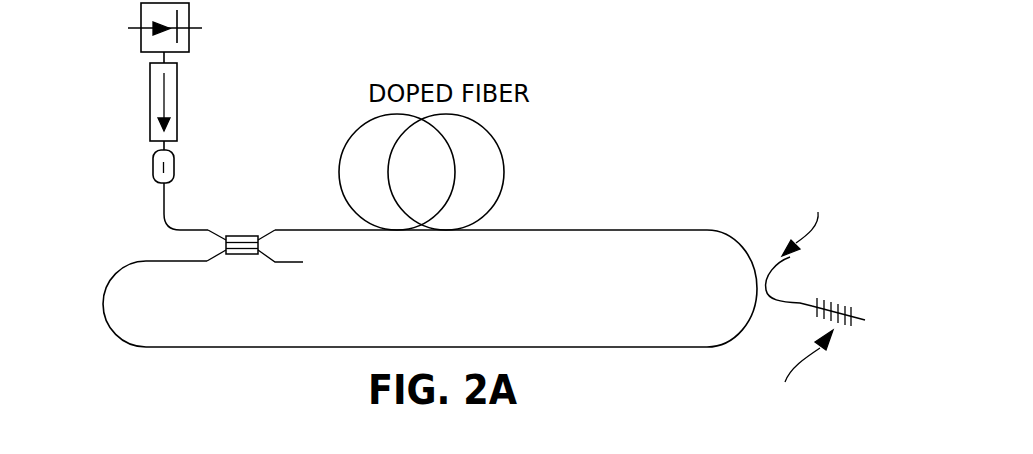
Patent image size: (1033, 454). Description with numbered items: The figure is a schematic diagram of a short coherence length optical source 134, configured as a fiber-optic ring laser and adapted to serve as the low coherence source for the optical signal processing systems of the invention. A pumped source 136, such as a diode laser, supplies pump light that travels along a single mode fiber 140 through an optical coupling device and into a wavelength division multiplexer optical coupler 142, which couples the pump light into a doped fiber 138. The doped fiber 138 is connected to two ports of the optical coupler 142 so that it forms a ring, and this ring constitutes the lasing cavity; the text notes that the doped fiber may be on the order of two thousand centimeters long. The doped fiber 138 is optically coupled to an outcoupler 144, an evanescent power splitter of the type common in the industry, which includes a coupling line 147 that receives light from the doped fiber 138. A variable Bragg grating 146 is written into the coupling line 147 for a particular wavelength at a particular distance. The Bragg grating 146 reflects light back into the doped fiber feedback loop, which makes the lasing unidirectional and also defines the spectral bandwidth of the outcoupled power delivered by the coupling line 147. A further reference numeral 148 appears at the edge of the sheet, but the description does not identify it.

The short coherence length optical source 134 is at (860, 130).
The pumped source 136 is at (133, 14).
The doped fiber 138 is at (296, 230).
The single mode fiber 140 is at (177, 105).
The wavelength division multiplexer optical coupler 142 is at (174, 162).
The outcoupler 144 is at (750, 234).
The variable Bragg grating 146 is at (863, 286).
The coupling line 147 is at (769, 293).
The fiber section 148 is at (102, 449).